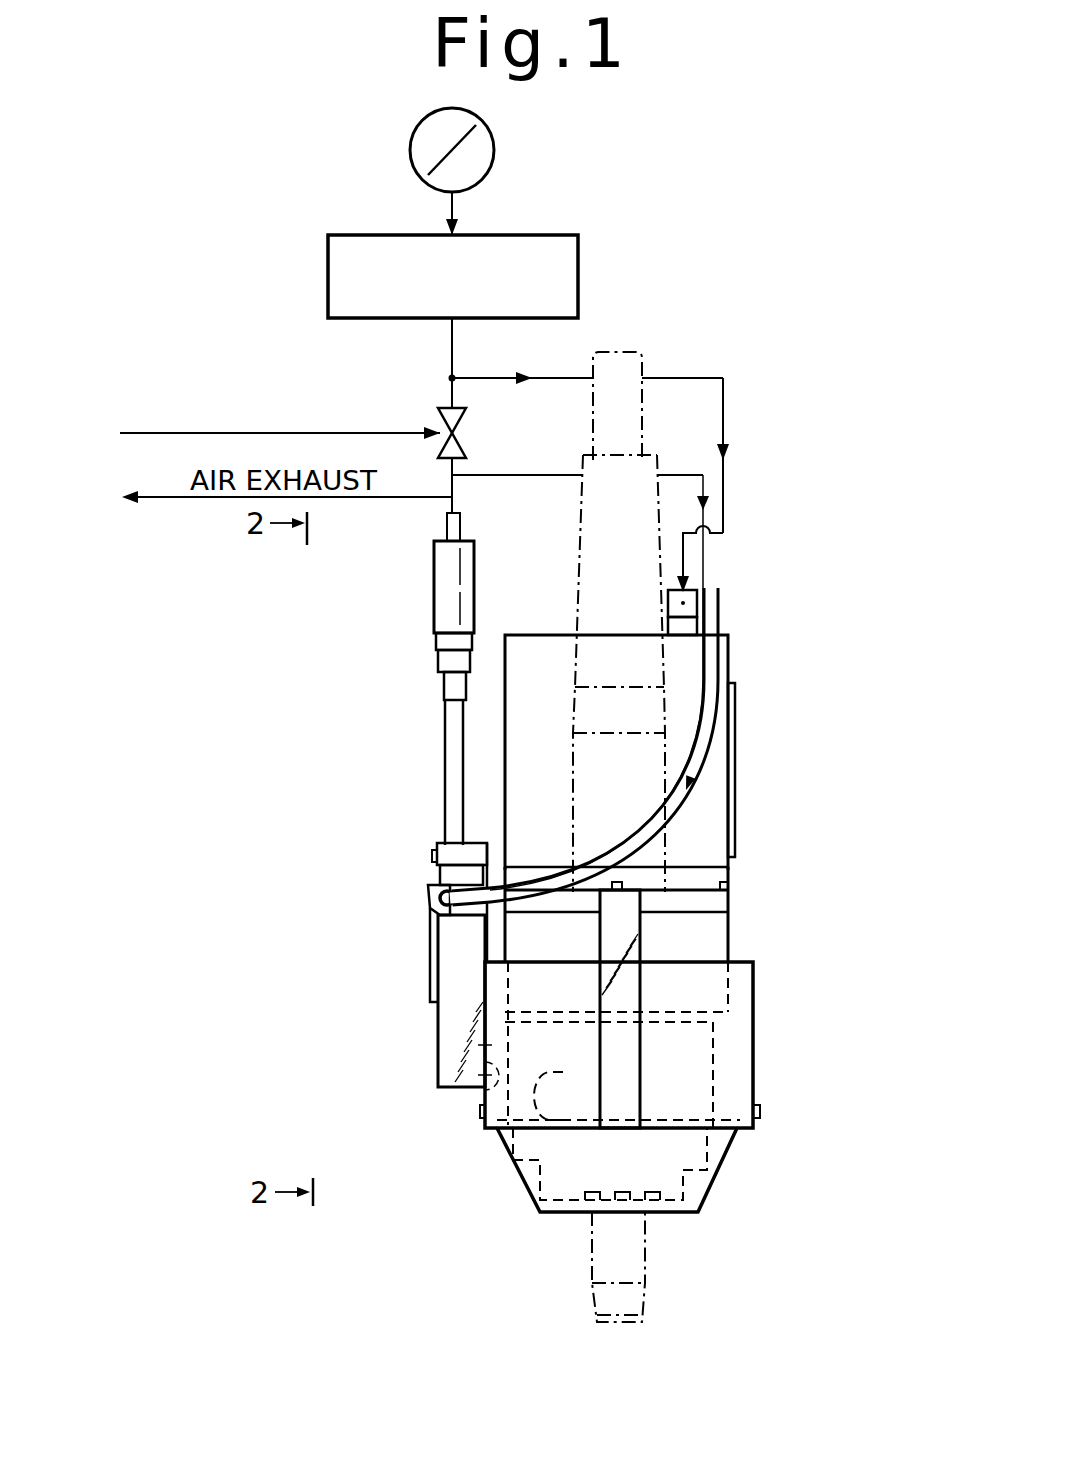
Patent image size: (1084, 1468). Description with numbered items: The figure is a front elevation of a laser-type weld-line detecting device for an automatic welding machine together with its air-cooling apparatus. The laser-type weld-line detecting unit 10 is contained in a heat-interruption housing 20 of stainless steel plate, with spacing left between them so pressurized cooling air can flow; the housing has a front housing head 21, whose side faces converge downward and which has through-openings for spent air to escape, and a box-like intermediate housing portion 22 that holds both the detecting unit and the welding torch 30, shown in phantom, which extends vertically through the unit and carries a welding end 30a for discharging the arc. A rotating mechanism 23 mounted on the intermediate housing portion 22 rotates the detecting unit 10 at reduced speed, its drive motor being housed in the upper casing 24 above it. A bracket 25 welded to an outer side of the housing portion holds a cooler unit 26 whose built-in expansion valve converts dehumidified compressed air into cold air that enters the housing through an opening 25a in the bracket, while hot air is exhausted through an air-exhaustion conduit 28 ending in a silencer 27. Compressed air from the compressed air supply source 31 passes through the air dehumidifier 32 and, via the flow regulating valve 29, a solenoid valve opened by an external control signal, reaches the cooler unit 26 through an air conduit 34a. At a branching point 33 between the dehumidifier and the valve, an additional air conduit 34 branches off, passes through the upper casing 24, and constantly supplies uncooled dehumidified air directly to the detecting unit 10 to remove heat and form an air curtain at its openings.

The laser-type weld-line detecting unit 10 is at (713, 1070).
The heat-interruption housing 20 is at (762, 977).
The housing head 21 is at (728, 1172).
The intermediate housing portion 22 is at (755, 1010).
The rotating mechanism 23 is at (720, 937).
The upper casing 24 is at (735, 738).
The bracket 25 is at (447, 1040).
The opening 25a is at (478, 1093).
The cooler unit 26 is at (430, 905).
The silencer 27 is at (447, 600).
The air-exhaustion conduit 28 is at (447, 740).
The flow regulating valve 29 is at (466, 422).
The welding torch 30 is at (640, 372).
The welding end 30a is at (632, 1323).
The compressed air supply source 31 is at (490, 152).
The air dehumidifier 32 is at (328, 262).
The branching point 33 is at (450, 377).
The additional air conduit 34 is at (508, 360).
The air conduit 34a is at (715, 673).